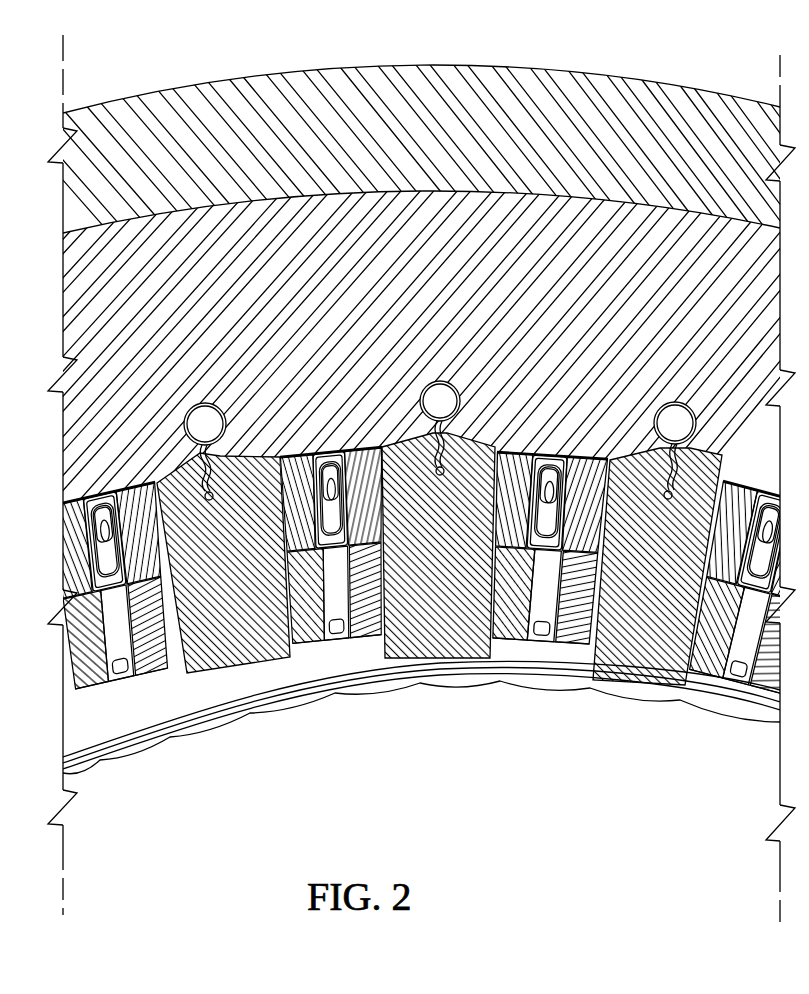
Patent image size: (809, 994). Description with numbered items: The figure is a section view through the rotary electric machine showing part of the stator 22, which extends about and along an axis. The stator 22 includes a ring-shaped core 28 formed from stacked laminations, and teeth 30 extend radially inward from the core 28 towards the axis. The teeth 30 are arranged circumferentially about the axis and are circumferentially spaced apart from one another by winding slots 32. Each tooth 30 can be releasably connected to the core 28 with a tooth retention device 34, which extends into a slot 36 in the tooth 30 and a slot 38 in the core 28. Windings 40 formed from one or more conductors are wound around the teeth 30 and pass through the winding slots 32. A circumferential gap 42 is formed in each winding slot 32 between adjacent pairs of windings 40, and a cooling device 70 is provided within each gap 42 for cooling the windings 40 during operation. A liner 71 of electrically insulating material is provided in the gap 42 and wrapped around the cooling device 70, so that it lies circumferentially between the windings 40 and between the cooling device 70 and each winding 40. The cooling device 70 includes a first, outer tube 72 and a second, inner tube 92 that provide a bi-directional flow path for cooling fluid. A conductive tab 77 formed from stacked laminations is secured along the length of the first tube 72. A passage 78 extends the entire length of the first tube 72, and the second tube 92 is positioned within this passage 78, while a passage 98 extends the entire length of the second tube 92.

The stator 22 is at (444, 90).
The ring-shaped core 28 is at (174, 260).
The teeth 30 is at (217, 652).
The winding slots 32 is at (338, 656).
The tooth retention device 34 is at (226, 428).
The slot 36 is at (210, 504).
The slot 38 is at (201, 403).
The windings 40 is at (386, 552).
The gap 42 is at (341, 450).
The cooling device 70 is at (305, 450).
The liner 71 is at (334, 594).
The first tube 72 is at (329, 494).
The conductive tab 77 is at (355, 604).
The passage 78 is at (318, 523).
The second tube 92 is at (326, 470).
The passage 98 is at (334, 468).